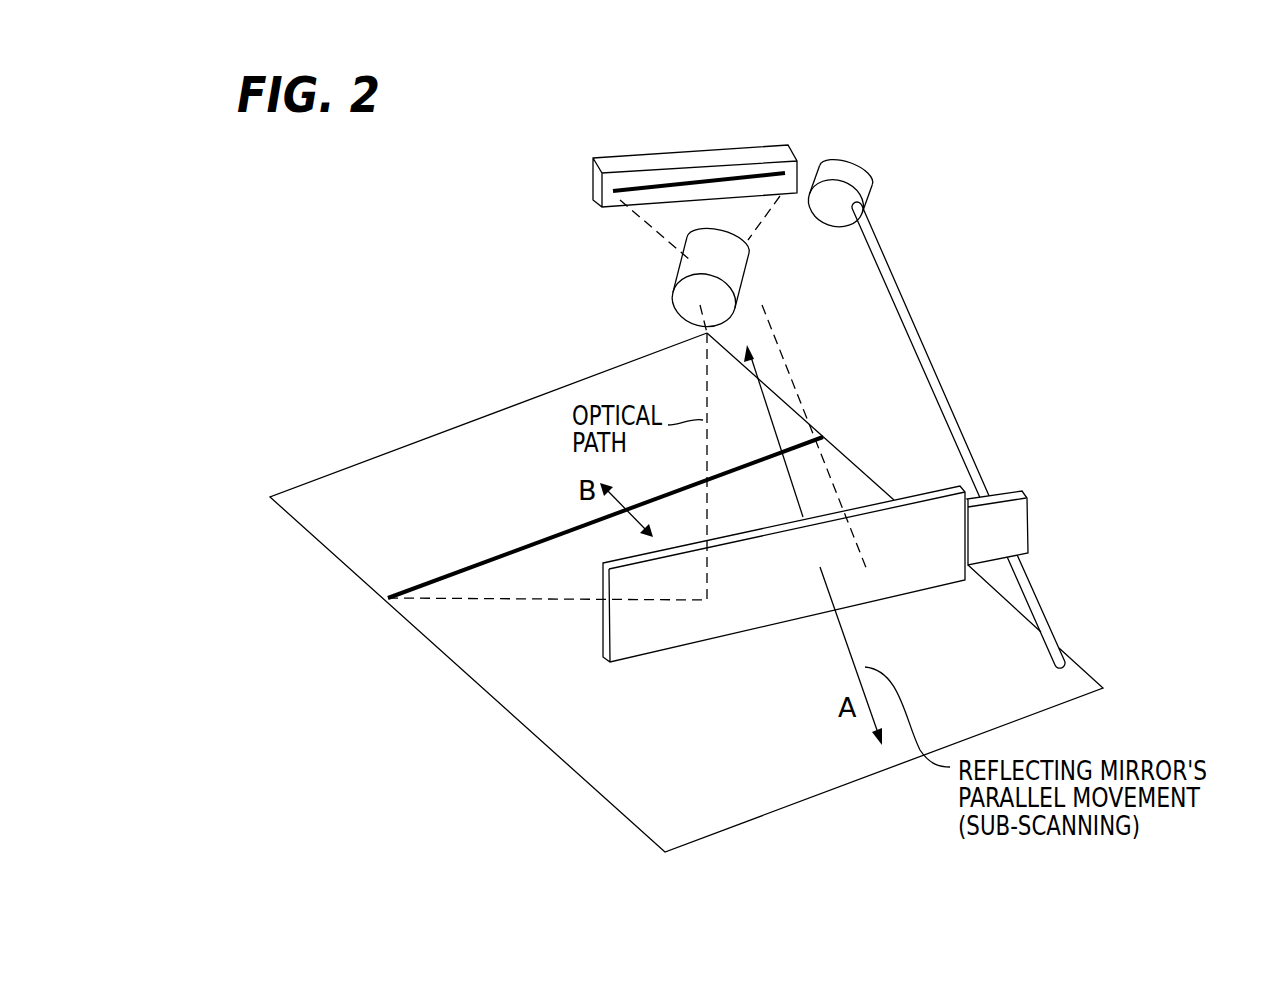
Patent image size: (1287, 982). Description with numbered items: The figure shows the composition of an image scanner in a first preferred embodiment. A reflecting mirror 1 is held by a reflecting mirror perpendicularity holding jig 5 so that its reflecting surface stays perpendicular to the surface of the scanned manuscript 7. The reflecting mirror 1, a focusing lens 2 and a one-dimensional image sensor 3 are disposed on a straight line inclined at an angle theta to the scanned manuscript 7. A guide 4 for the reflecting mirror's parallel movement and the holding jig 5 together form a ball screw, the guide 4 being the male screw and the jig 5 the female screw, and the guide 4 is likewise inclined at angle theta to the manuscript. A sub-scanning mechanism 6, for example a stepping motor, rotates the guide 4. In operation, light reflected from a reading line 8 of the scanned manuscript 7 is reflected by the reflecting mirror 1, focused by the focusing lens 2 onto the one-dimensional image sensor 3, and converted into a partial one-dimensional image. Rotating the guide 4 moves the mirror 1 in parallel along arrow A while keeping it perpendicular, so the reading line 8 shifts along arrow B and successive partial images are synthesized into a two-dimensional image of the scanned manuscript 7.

The reflecting mirror 1 is at (600, 638).
The focusing lens 2 is at (687, 273).
The one-dimensional image sensor 3 is at (673, 158).
The guide for reflecting mirror's parallel movement 4 is at (923, 343).
The reflecting mirror perpendicularity holding jig 5 is at (1017, 508).
The sub-scanning mechanism 6 is at (865, 172).
The scanned manuscript 7 is at (617, 777).
The reading line 8 is at (468, 568).